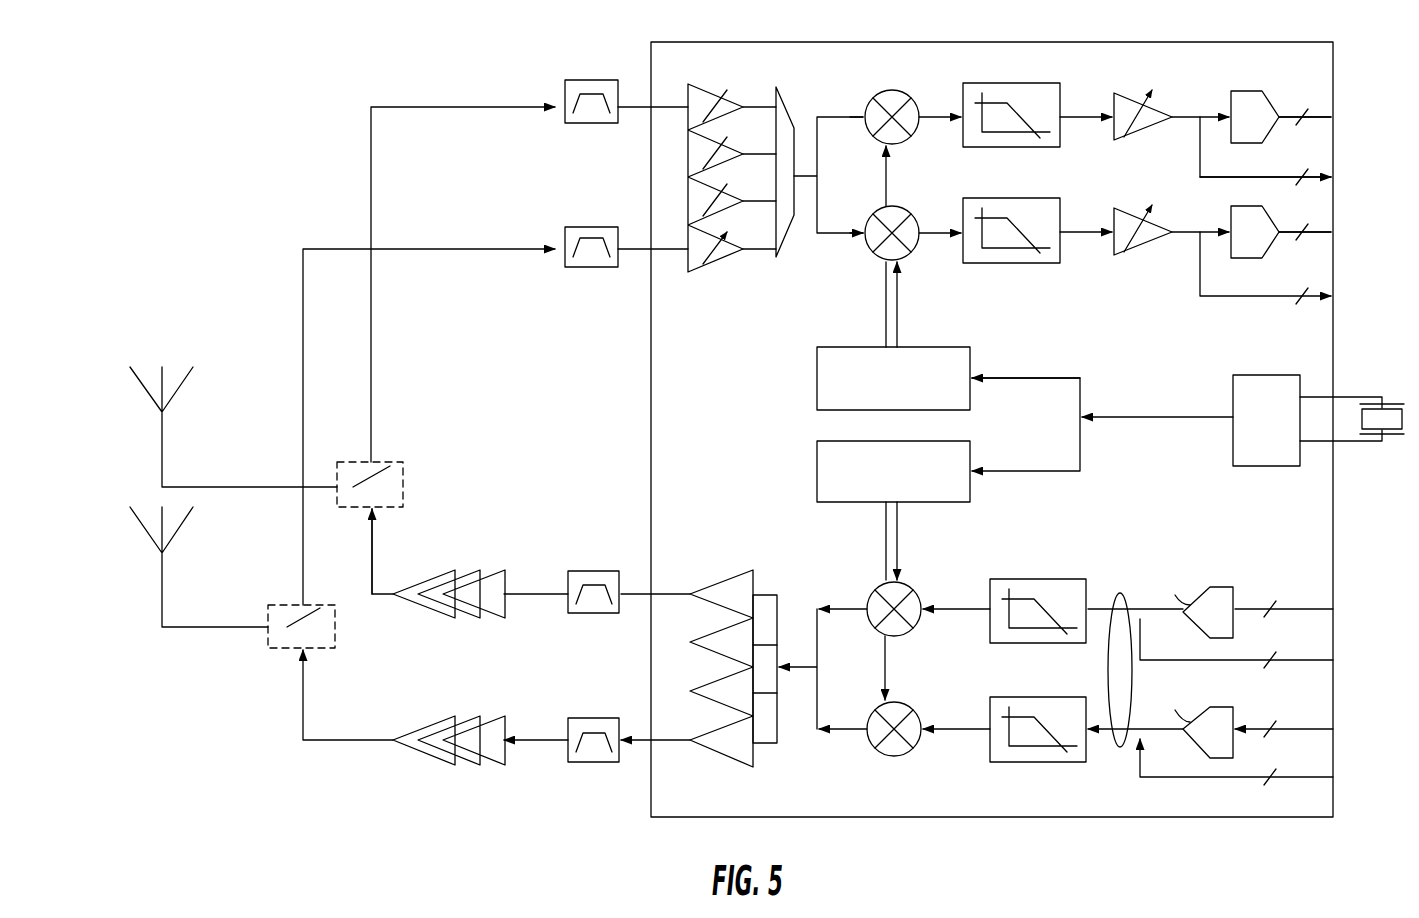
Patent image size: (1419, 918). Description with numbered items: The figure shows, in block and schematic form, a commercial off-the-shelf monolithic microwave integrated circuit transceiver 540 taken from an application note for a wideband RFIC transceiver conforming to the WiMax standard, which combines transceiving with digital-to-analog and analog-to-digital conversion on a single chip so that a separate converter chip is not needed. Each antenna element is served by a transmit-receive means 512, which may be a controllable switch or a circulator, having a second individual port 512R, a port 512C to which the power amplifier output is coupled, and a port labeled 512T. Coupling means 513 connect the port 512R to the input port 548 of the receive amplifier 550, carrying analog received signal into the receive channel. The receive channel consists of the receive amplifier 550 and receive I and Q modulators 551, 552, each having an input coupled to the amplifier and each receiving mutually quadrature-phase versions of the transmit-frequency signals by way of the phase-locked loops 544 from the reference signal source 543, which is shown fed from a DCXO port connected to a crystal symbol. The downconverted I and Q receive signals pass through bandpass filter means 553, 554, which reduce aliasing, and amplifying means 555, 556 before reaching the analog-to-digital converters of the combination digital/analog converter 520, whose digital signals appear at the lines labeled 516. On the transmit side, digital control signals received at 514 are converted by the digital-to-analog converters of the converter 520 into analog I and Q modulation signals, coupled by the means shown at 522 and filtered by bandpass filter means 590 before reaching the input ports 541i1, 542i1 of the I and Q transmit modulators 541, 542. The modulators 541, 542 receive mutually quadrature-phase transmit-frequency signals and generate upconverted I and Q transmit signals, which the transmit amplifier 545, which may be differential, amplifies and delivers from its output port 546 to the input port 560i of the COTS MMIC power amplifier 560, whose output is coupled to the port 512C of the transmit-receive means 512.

The transmit-receive means 512 is at (323, 544).
The second individual port 512R is at (283, 648).
The first individual port 512C is at (337, 490).
The transmit switch terminal 512T is at (320, 648).
The coupling means 513 is at (371, 185).
The digital control signal input 514 is at (1350, 607).
The receive digital outputs 516 is at (1350, 95).
The combination digital/analog converters chip 520 is at (1233, 312).
The differential signal bus 522 is at (1122, 747).
The wideband RFIC transceiver 540 is at (990, 820).
The I transmit modulator 541 is at (1070, 150).
The I input port 541i1 is at (908, 755).
The Q transmit modulator 542 is at (912, 630).
The transmit Q-channel mixer input 542i1 is at (958, 609).
The transmit-frequency oscillator or reference signal source 543 is at (1103, 357).
The phase-locked loop coupling path 544 is at (960, 329).
The transmit amplifier 545 is at (768, 566).
The output port of the transmit amplifier 546 is at (645, 740).
The input port of the receive amplifier 548 is at (647, 107).
The receive amplifier 550 is at (741, 336).
The receive I modulator 551 is at (873, 253).
The receive Q modulator 552 is at (883, 92).
The bandpass filter means 553 is at (1020, 263).
The bandpass filter means 554 is at (971, 83).
The amplifying means 555 is at (1141, 252).
The amplifying means 556 is at (1141, 137).
The COTS MMIC power amplifier 560 is at (480, 618).
The input port of the power amplifier 560i is at (505, 740).
The bandpass filter means 590 is at (1050, 646).